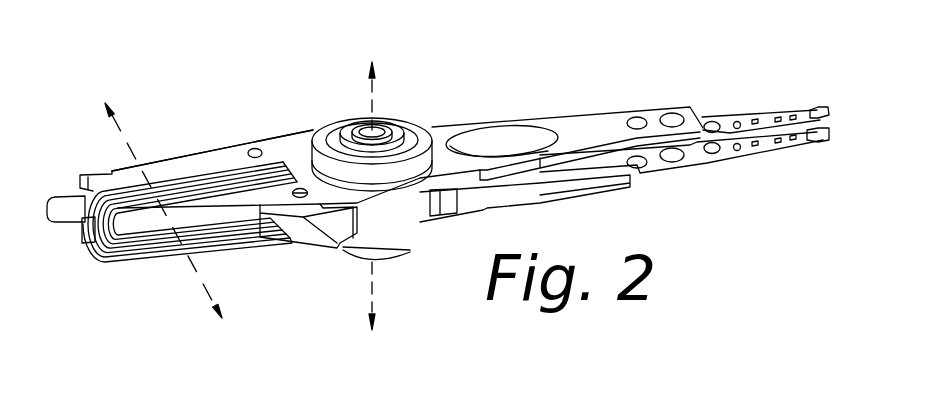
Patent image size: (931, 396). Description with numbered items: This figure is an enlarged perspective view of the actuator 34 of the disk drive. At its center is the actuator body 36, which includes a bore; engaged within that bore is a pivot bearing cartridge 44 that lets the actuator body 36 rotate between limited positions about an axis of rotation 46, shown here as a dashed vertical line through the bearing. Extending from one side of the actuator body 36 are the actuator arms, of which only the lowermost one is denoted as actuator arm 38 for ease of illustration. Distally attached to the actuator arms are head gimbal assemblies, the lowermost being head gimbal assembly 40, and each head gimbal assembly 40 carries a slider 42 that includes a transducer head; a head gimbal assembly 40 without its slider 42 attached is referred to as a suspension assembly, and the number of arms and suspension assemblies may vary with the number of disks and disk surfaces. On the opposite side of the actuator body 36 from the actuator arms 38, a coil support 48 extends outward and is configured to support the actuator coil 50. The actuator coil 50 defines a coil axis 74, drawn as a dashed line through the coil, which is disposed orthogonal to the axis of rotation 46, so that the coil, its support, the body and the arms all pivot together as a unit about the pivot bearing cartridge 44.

The actuator 34 is at (437, 130).
The actuator body 36 is at (283, 137).
The actuator arm 38 is at (595, 122).
The head gimbal assembly 40 is at (713, 117).
The slider 42 is at (815, 134).
The pivot bearing cartridge 44 is at (352, 131).
The axis of rotation 46 is at (370, 291).
The coil support 48 is at (152, 257).
The actuator coil 50 is at (88, 225).
The coil axis 74 is at (120, 142).